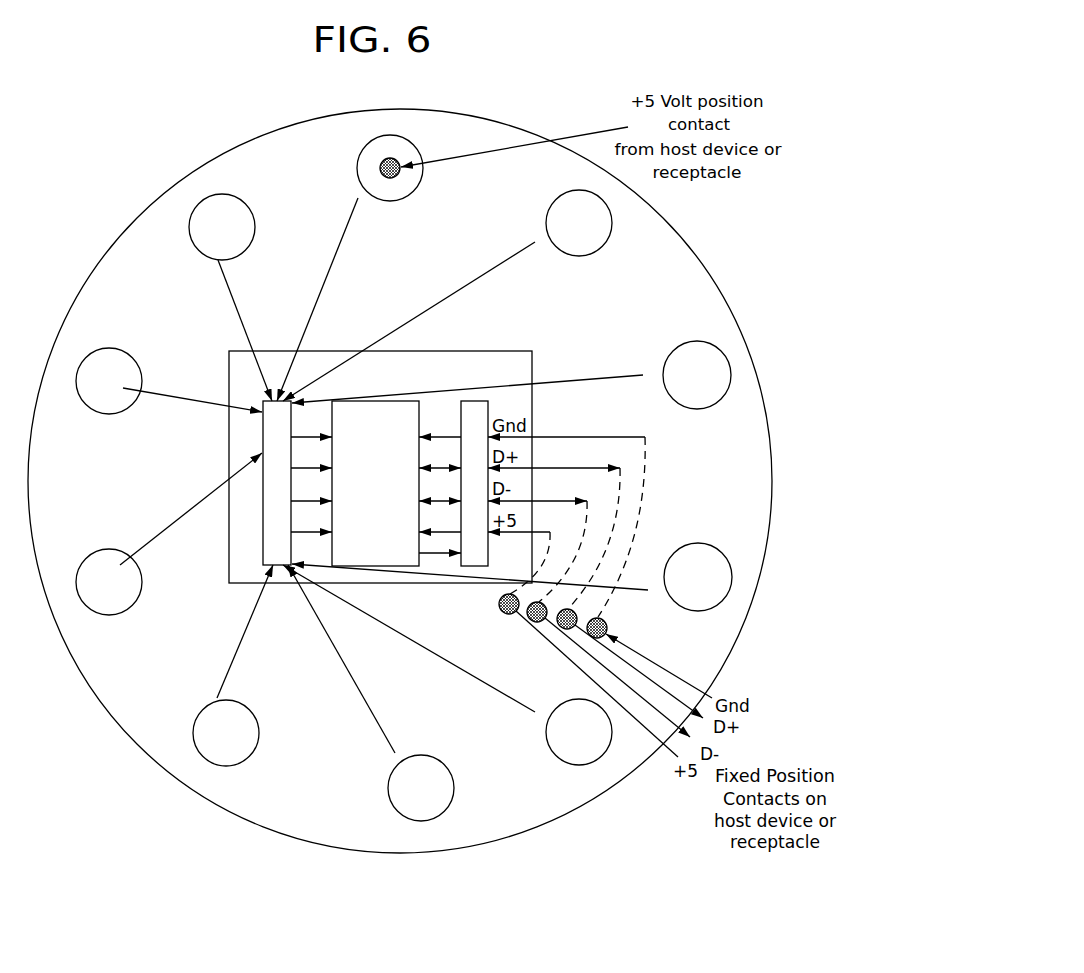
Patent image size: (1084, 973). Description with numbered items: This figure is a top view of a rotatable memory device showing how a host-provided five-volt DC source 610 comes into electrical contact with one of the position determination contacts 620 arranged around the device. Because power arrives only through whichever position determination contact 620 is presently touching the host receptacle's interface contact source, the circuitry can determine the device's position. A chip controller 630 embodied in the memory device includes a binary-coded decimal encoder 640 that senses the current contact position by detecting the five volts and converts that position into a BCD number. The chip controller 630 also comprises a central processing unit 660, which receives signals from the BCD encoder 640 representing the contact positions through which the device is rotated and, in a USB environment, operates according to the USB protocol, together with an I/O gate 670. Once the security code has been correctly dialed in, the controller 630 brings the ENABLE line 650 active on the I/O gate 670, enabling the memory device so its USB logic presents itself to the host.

The host-provided 5-volt DC source 610 is at (383, 163).
The position determination contact 620 is at (388, 140).
The chip controller 630 is at (229, 436).
The binary-coded decimal encoder 640 is at (263, 502).
The ENABLE line 650 is at (432, 553).
The central processing unit 660 is at (375, 483).
The I/O gate 670 is at (482, 401).